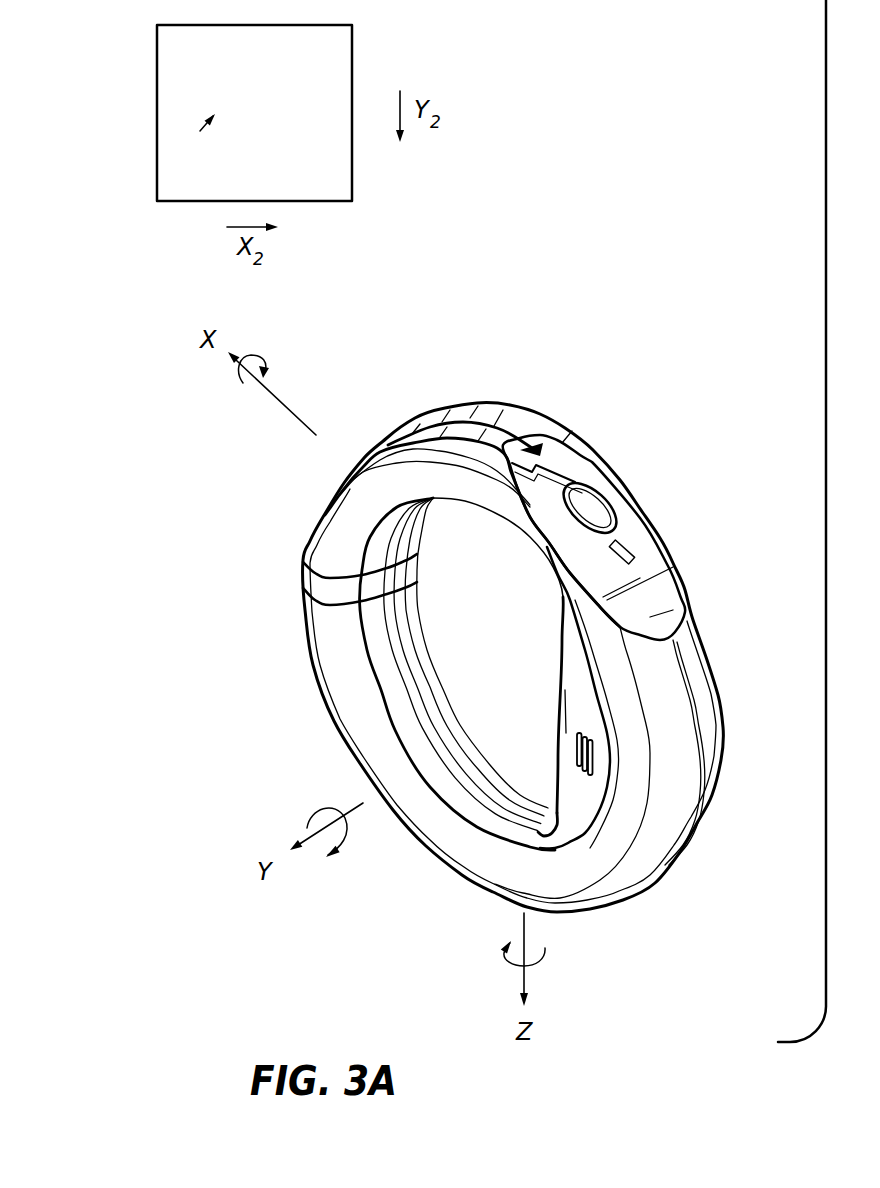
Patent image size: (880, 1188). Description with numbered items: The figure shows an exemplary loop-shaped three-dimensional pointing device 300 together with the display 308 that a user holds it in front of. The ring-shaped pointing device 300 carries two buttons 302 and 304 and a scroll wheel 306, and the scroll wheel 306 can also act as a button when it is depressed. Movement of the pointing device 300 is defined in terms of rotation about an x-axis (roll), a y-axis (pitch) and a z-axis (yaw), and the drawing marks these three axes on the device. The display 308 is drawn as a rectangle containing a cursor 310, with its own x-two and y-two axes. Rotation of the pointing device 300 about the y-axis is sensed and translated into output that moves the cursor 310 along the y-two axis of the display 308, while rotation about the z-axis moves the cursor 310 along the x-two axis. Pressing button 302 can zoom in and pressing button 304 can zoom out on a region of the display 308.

The 3D pointing device 300 is at (778, 390).
The button 302 is at (560, 533).
The button 304 is at (617, 490).
The scroll wheel 306 is at (588, 484).
The display 308 is at (352, 60).
The cursor 310 is at (200, 130).